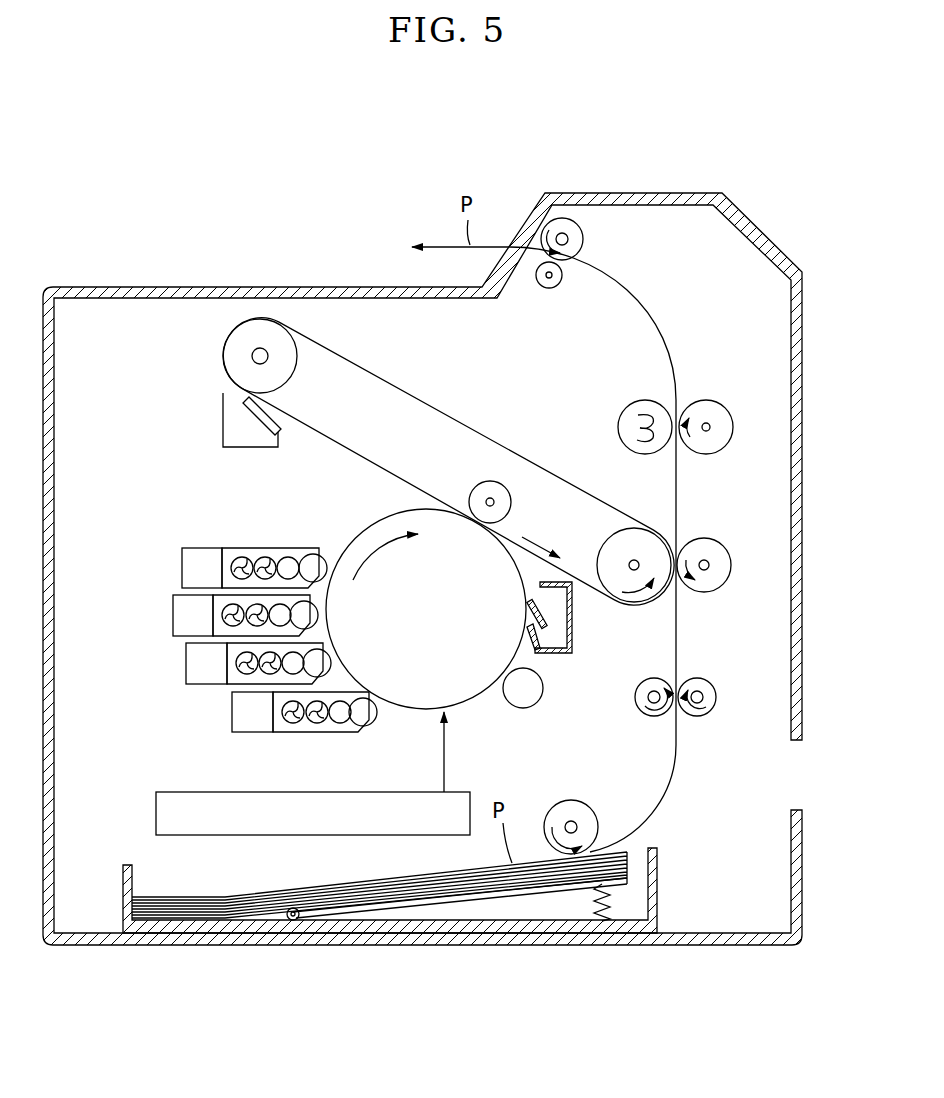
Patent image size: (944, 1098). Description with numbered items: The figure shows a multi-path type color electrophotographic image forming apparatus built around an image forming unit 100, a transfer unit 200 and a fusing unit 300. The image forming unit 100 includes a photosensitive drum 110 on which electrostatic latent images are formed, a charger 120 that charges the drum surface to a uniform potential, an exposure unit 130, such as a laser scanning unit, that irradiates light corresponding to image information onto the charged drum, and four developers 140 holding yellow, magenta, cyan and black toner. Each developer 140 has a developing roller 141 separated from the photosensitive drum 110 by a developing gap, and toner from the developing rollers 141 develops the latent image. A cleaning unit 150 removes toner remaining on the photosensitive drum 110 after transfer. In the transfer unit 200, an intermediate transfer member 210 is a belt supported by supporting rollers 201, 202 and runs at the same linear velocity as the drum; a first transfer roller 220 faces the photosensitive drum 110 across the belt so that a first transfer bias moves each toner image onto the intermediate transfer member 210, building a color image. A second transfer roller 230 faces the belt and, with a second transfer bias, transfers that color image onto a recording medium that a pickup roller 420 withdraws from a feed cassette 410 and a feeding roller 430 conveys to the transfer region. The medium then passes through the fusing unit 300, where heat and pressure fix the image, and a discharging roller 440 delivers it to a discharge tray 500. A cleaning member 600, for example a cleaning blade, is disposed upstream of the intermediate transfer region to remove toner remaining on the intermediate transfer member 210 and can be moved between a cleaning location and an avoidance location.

The image forming unit 100 is at (283, 500).
The photosensitive drum 110 is at (355, 535).
The charger 120 is at (533, 698).
The exposure unit 130 is at (156, 814).
The developer 140 is at (163, 545).
The developing roller 141 is at (362, 699).
The cleaning unit 150 is at (563, 655).
The transfer unit 200 is at (570, 460).
The supporting roller 201 is at (235, 350).
The supporting roller 202 is at (623, 543).
The intermediate transfer member 210 is at (367, 370).
The first transfer roller 220 is at (495, 490).
The second transfer roller 230 is at (727, 545).
The fusing unit 300 is at (743, 400).
The feed cassette 410 is at (660, 875).
The pickup roller 420 is at (558, 810).
The feeding roller 430 is at (712, 687).
The discharging roller 440 is at (583, 238).
The discharge tray 500 is at (297, 287).
The cleaning member 600 is at (253, 415).